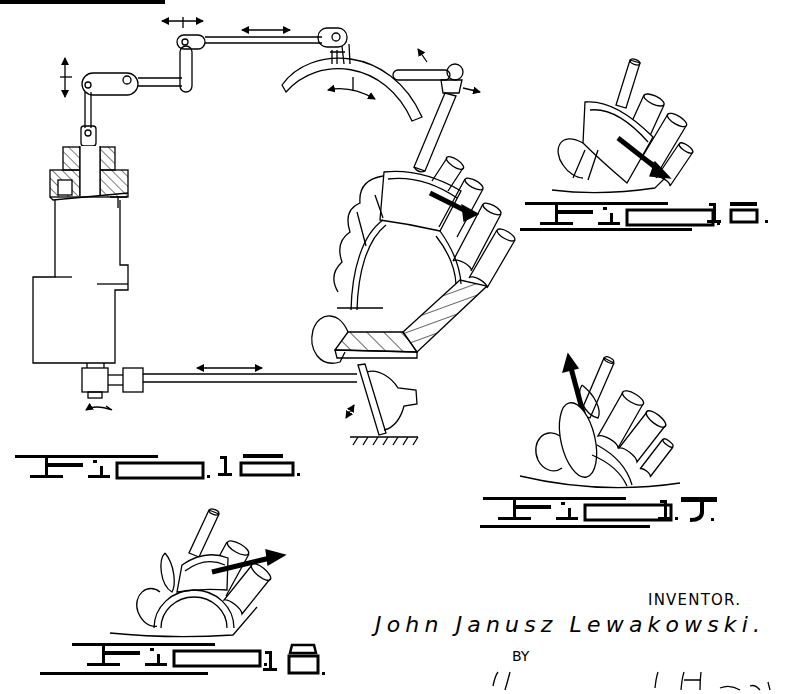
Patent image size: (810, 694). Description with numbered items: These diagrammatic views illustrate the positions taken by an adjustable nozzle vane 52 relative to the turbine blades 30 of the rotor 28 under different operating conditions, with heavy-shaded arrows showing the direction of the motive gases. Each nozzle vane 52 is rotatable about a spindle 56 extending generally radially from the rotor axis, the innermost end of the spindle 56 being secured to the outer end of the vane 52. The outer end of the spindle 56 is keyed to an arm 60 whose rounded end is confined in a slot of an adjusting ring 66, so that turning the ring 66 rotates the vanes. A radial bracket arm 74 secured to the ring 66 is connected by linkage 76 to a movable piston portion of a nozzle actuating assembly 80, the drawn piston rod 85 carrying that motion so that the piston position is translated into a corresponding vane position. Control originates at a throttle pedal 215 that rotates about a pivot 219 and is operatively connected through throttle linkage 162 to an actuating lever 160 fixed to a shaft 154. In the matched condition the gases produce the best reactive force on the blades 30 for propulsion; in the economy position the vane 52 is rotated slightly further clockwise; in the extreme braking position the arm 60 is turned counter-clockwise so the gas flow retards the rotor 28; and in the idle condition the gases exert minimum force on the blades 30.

In FIG. 15, the rotor 28 is at (448, 313).
In FIG. 16, the rotor 28 is at (578, 187).
In FIG. 17, the rotor 28 is at (635, 487).
In FIG. 18, the rotor 28 is at (153, 627).
In FIG. 15, the turbine blades 30 is at (507, 190).
In FIG. 16, the turbine blades 30 is at (668, 97).
In FIG. 17, the turbine blades 30 is at (645, 398).
In FIG. 18, the turbine blades 30 is at (256, 573).
In FIG. 15, the adjustable nozzle vane 52 is at (396, 222).
In FIG. 16, the adjustable nozzle vane 52 is at (584, 120).
In FIG. 17, the adjustable nozzle vane 52 is at (570, 465).
In FIG. 18, the adjustable nozzle vane 52 is at (163, 574).
In FIG. 15, the spindle 56 is at (447, 126).
In FIG. 16, the spindle 56 is at (638, 70).
In FIG. 17, the spindle 56 is at (608, 377).
In FIG. 18, the spindle 56 is at (215, 522).
In FIG. 15, the arm 60 is at (406, 68).
In FIG. 15, the adjusting ring 66 is at (362, 64).
In FIG. 15, the radial bracket arm 74 is at (343, 30).
In FIG. 15, the linkage 76 is at (193, 90).
In FIG. 15, the nozzle actuating assembly 80 is at (130, 230).
In FIG. 15, the piston rod 85 is at (99, 134).
In FIG. 15, the shaft 154 is at (88, 397).
In FIG. 15, the actuating lever 160 is at (81, 379).
In FIG. 15, the throttle linkage 162 is at (220, 386).
In FIG. 15, the throttle pedal 215 is at (366, 391).
In FIG. 15, the pivot 219 is at (382, 438).